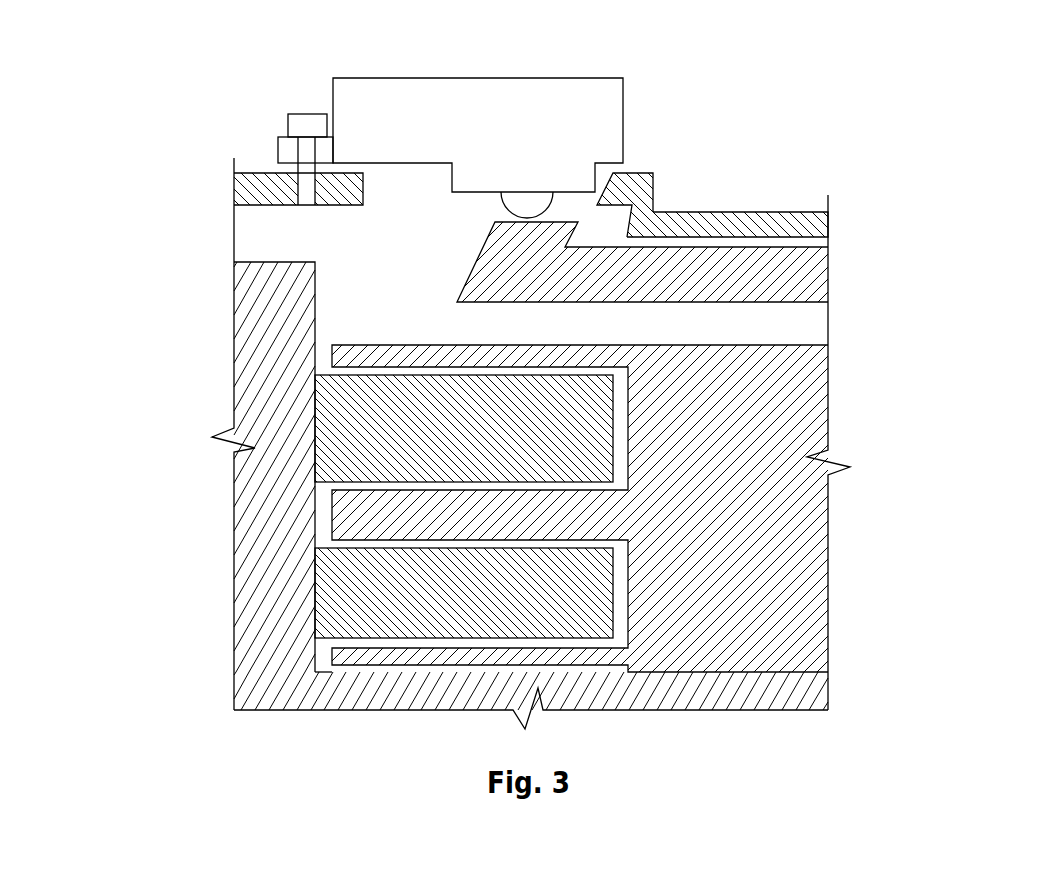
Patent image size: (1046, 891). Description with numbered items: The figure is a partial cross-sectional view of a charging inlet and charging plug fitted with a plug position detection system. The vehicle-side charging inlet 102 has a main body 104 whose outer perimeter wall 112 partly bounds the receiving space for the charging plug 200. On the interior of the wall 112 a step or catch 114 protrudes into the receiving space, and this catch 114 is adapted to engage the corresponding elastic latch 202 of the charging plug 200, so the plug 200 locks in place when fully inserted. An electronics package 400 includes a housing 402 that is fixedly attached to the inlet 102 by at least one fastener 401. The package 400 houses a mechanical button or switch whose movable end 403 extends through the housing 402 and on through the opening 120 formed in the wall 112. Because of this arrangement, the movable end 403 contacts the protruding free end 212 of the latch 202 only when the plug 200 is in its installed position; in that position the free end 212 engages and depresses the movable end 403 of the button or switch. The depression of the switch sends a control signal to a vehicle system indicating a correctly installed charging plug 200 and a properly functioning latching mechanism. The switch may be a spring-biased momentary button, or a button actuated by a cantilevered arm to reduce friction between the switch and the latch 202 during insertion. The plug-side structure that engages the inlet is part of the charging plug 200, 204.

The electronics package 400 is at (300, 53).
The fastener 401 is at (292, 128).
The housing 402 is at (507, 93).
The movable end 403 is at (528, 210).
The catch 114 is at (638, 195).
The free end 212 is at (540, 267).
The elastic latch 202 is at (800, 273).
The opening 120 is at (425, 195).
The main body 104 is at (203, 402).
The perimeter wall 112 is at (243, 191).
The charging inlet 102 is at (258, 375).
The charging plug 200 is at (597, 527).
The carrier body 204 is at (790, 382).